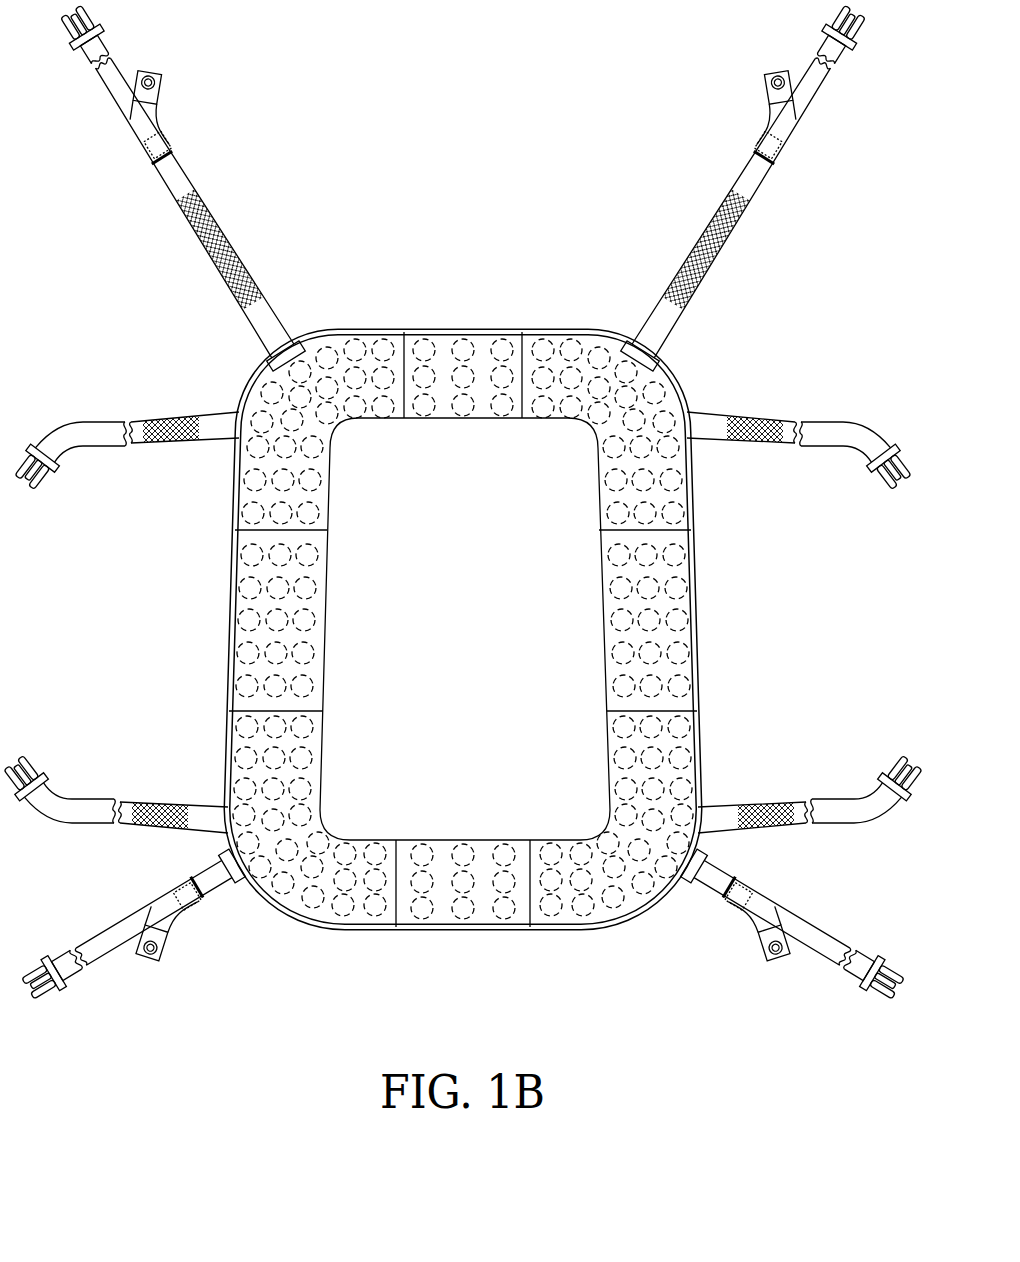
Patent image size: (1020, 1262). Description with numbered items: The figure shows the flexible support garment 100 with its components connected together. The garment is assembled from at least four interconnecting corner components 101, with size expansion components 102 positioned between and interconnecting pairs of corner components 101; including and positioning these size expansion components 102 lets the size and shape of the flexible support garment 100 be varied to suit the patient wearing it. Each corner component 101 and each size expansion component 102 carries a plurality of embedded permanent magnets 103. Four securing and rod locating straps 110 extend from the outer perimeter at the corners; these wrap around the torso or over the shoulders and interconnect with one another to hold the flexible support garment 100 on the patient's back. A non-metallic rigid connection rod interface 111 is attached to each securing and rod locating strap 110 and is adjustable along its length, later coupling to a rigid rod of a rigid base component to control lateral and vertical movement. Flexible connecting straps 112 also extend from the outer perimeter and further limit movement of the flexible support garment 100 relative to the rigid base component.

The flexible support garment 100 is at (528, 173).
The corner component 101 is at (335, 350).
The size expansion component 102 is at (240, 600).
The embedded permanent magnet 103 is at (568, 833).
The securing and rod locating strap 110 is at (175, 188).
The non-metallic rigid connection rod interface 111 is at (157, 100).
The flexible connecting strap 112 is at (80, 432).